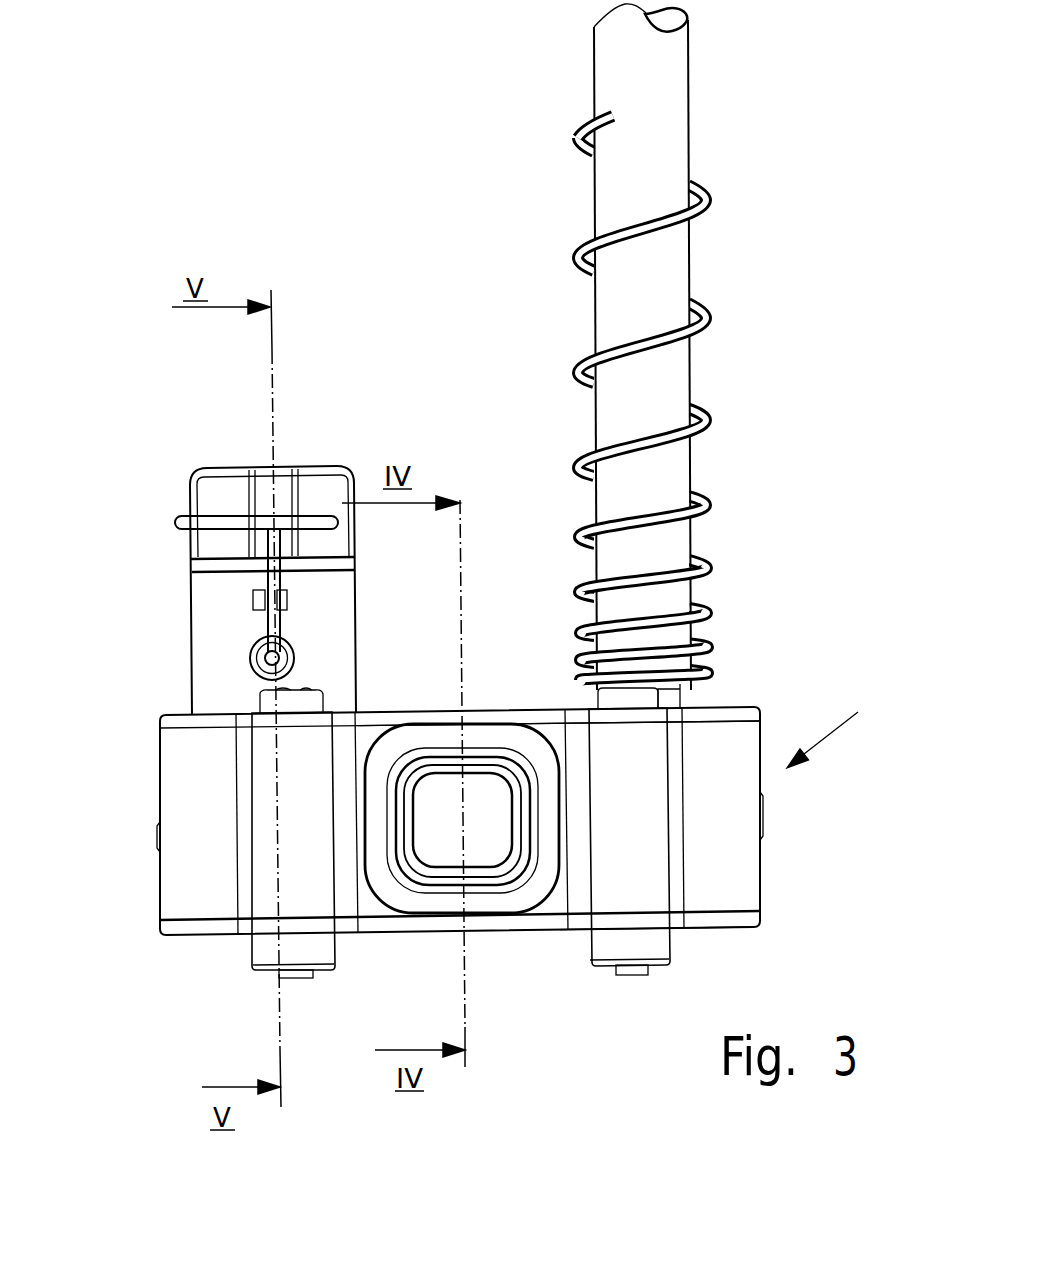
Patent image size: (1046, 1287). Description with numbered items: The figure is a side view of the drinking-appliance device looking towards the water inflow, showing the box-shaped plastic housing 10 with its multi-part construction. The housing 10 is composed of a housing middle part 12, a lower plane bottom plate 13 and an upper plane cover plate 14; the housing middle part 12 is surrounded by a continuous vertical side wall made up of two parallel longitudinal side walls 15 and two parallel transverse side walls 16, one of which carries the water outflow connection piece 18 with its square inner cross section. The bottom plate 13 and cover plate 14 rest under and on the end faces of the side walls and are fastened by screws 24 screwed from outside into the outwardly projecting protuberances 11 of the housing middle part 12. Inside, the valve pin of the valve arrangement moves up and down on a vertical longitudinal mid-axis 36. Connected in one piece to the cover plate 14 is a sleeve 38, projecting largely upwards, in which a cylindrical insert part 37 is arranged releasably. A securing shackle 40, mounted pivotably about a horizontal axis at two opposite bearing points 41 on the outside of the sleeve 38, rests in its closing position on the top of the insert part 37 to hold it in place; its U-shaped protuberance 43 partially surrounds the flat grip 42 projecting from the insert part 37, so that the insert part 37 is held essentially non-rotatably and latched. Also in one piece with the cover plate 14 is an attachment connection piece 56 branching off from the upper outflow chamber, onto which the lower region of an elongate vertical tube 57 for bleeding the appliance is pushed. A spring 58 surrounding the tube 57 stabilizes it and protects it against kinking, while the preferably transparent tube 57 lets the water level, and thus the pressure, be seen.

The housing 10 is at (839, 730).
The protuberances 11 is at (652, 875).
The housing middle part 12 is at (731, 746).
The bottom plate 13 is at (732, 927).
The cover plate 14 is at (740, 706).
The longitudinal side walls 15 is at (157, 842).
The transverse side walls 16 is at (377, 900).
The water outflow connection piece 18 is at (532, 893).
The screws 24 is at (267, 705).
The vertical longitudinal mid-axis 36 is at (277, 807).
The insert part 37 is at (193, 563).
The sleeve 38 is at (205, 613).
The securing shackle 40 is at (282, 580).
The bearing points 41 is at (293, 658).
The flat grip 42 is at (317, 512).
The U-shaped protuberance 43 is at (222, 522).
The attachment connection piece 56 is at (673, 692).
The tube 57 is at (668, 383).
The spring 58 is at (731, 347).